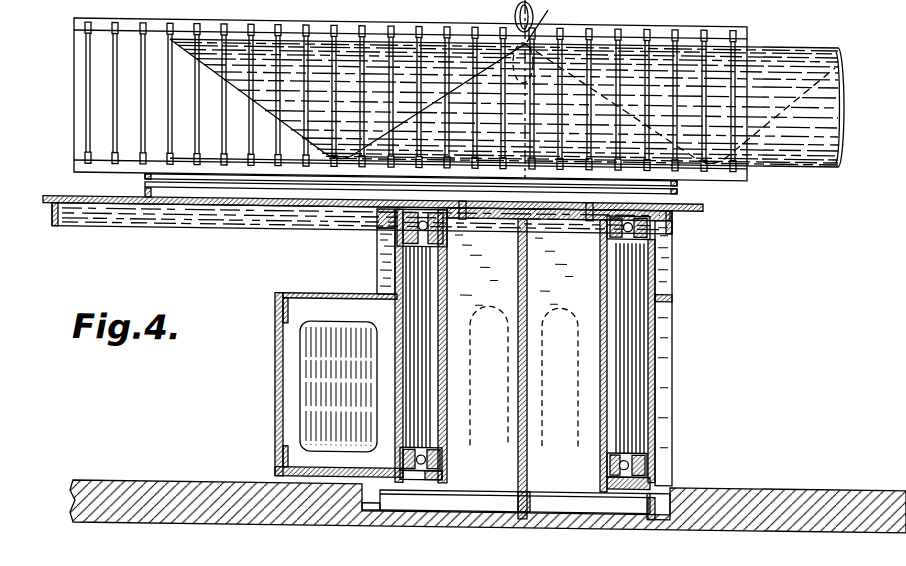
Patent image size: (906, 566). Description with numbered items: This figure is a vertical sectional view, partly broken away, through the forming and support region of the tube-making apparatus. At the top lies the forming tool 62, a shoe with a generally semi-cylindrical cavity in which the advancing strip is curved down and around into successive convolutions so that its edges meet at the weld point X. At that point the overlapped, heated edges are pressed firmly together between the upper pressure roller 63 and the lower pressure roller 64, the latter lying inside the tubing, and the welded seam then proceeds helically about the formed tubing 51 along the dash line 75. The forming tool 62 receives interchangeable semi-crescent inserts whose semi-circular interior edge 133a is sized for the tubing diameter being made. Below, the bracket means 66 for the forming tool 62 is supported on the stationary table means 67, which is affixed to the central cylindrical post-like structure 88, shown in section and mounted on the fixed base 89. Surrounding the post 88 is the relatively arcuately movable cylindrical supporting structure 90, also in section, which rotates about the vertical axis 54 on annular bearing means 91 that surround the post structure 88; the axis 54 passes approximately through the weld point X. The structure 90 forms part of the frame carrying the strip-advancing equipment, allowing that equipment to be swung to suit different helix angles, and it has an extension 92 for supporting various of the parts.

The helically formed and welded tubing 51 is at (782, 41).
The vertical axis 54 is at (528, 106).
The forming tool 62 is at (100, 18).
The upper pressure roller 63 is at (514, 7).
The lower pressure roller 64 is at (517, 72).
The bracket means 66 is at (315, 197).
The stationary table means 67 is at (63, 196).
The helical seam line 75 is at (602, 83).
The central cylindrical post-like structure 88 is at (603, 365).
The fixed base 89 is at (487, 498).
The cylindrical supporting structure 90 is at (397, 271).
The annular bearing means 91 is at (398, 223).
The extension 92 is at (278, 291).
The interior edge of insert 133a is at (112, 95).
The weld point X is at (543, 21).